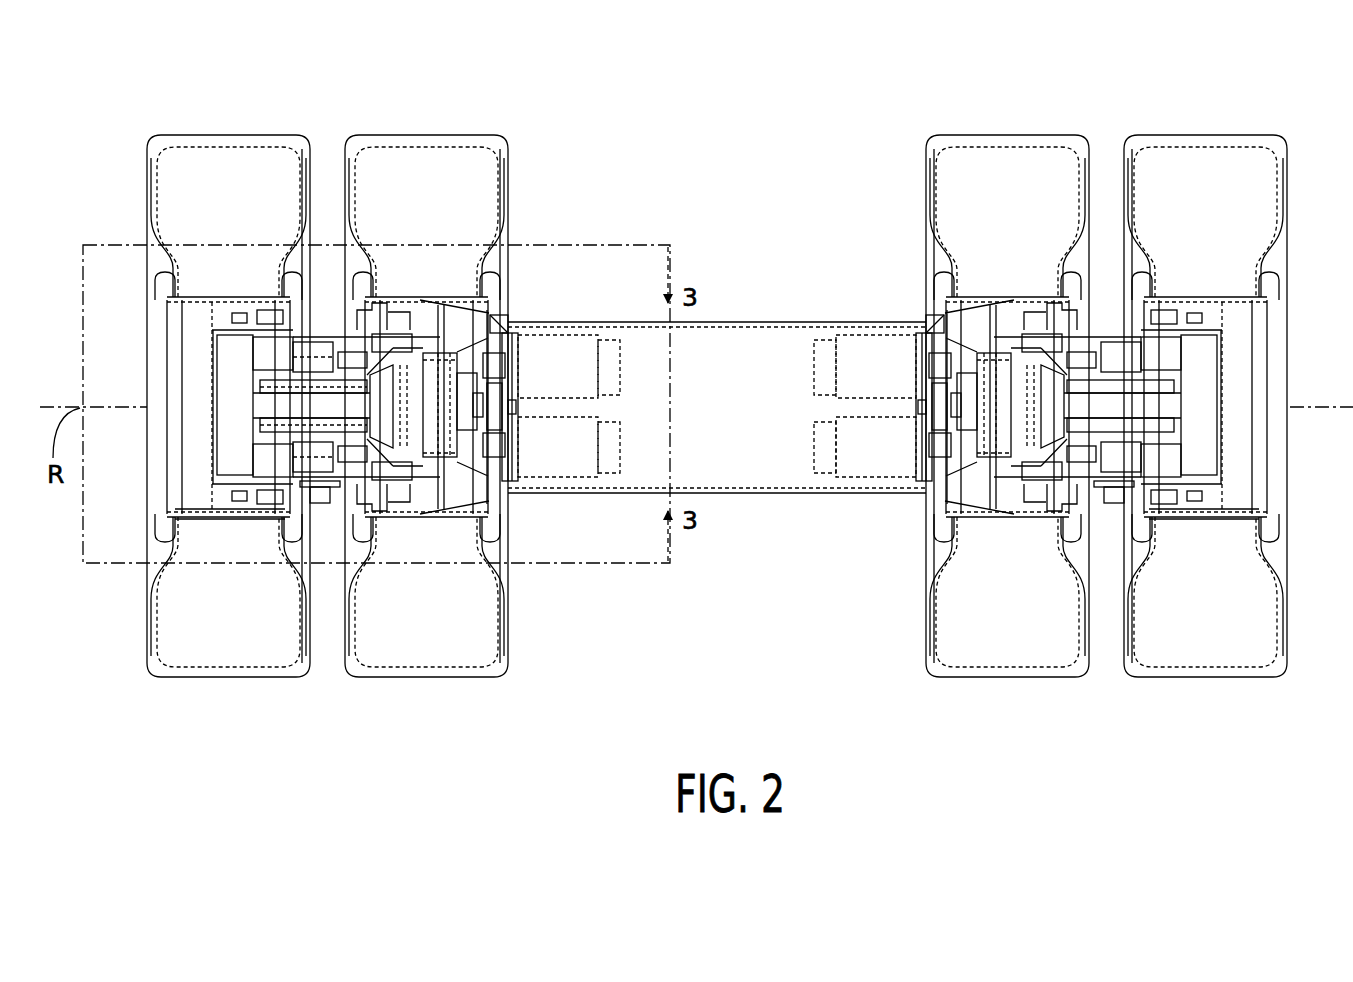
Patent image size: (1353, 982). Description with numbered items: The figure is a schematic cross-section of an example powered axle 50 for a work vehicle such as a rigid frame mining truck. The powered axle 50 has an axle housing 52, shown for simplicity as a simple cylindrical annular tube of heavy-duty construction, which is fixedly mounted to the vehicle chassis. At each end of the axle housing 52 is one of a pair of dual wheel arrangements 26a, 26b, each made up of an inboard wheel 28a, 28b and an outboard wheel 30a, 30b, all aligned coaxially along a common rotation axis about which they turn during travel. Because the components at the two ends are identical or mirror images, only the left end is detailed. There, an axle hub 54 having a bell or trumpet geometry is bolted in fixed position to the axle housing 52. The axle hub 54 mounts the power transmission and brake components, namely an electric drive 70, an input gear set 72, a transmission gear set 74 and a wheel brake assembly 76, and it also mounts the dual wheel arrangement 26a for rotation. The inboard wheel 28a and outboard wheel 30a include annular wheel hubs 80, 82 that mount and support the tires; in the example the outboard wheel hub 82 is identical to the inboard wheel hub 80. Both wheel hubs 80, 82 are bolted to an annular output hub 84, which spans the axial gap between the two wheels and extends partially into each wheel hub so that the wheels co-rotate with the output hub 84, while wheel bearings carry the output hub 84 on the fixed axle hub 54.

The dual wheel arrangement 26a is at (326, 368).
The dual wheel arrangement 26b is at (1107, 368).
The inboard wheel 28a is at (505, 268).
The inboard wheel 28b is at (925, 268).
The outboard wheel 30a is at (146, 268).
The outboard wheel 30b is at (1284, 268).
The powered axle 50 is at (717, 370).
The axle housing 52 is at (770, 320).
The axle hub 54 is at (466, 490).
The electric drive 70 is at (655, 400).
The input gear set 72 is at (518, 407).
The transmission gear set 74 is at (448, 380).
The wheel brake assembly 76 is at (350, 350).
The inboard wheel hub 80 is at (410, 516).
The outboard wheel hub 82 is at (195, 516).
The output hub 84 is at (326, 333).